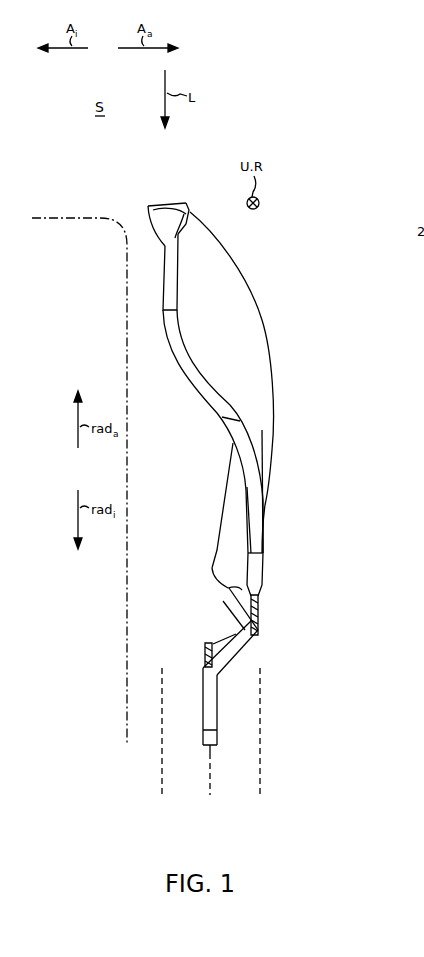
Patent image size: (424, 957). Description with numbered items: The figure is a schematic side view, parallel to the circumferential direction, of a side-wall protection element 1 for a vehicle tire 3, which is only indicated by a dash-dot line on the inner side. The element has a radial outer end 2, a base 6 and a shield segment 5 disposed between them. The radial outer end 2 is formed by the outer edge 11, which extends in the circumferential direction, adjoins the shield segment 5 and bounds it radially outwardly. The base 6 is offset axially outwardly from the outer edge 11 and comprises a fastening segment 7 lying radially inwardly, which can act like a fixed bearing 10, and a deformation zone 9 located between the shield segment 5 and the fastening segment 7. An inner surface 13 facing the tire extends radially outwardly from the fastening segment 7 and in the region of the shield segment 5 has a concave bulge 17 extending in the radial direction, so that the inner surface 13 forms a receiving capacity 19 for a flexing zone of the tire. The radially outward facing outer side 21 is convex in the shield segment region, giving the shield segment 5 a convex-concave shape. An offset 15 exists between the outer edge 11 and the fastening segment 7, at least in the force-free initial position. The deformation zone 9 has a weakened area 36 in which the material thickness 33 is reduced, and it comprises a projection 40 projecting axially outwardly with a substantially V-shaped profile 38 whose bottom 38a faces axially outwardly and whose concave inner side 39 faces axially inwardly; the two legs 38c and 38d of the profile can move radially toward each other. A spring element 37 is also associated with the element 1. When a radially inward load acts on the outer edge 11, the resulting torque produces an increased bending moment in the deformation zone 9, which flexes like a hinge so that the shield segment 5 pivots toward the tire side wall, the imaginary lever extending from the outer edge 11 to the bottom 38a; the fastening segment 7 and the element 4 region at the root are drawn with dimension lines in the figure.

The side-wall protection element 1 is at (309, 198).
The radial outer end 2 is at (203, 197).
The vehicle tire 3 is at (55, 223).
The blade root end 4 is at (230, 756).
The shield segment 5 is at (333, 594).
The base 6 is at (358, 597).
The fastening segment 7 is at (322, 665).
The deformation zone 9 is at (287, 597).
The fixed bearing 10 is at (232, 720).
The outer edge 11 is at (181, 213).
The inner surface 13 is at (215, 470).
The offset 15 is at (260, 787).
The bulge 17 is at (228, 402).
The receiving capacity 19 is at (193, 500).
The outer side 21 is at (247, 304).
The material thickness 33 is at (200, 278).
The weakened area 36 is at (243, 609).
The spring element 37 is at (262, 662).
The V-shaped profile 38 is at (224, 639).
The bottom 38a is at (270, 604).
The leg 38c is at (261, 593).
The leg 38d is at (204, 644).
The inner side 39 is at (226, 638).
The projection 40 is at (234, 615).